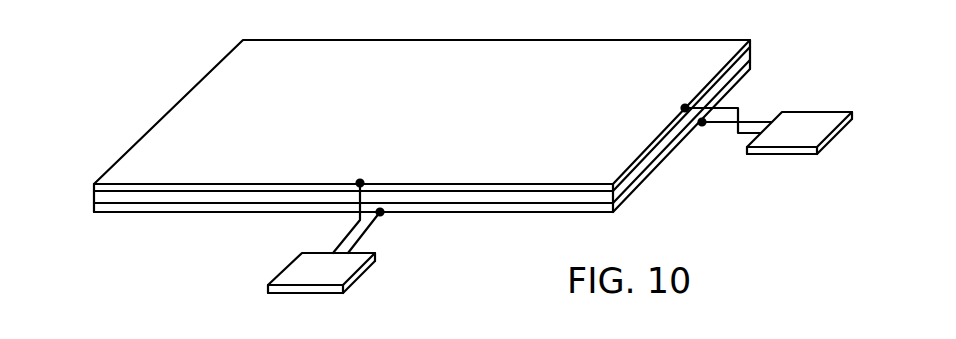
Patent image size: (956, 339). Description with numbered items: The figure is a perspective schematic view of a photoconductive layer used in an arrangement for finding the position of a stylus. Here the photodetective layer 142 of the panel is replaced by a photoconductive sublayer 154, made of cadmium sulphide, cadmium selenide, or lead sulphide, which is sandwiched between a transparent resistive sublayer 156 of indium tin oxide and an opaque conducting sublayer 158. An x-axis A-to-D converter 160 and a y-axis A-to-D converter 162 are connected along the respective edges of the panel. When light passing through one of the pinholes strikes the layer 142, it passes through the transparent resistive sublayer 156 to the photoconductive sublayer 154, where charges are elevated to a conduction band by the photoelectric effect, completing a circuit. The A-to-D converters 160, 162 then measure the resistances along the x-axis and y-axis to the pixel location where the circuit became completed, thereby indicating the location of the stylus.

The photodetective layer 142 is at (389, 164).
The photoconductive sublayer 154 is at (500, 198).
The transparent resistive sublayer 156 is at (213, 72).
The opaque conducting sublayer 158 is at (170, 214).
The x-axis A-to-D converter 160 is at (357, 280).
The y-axis A-to-D converter 162 is at (752, 157).